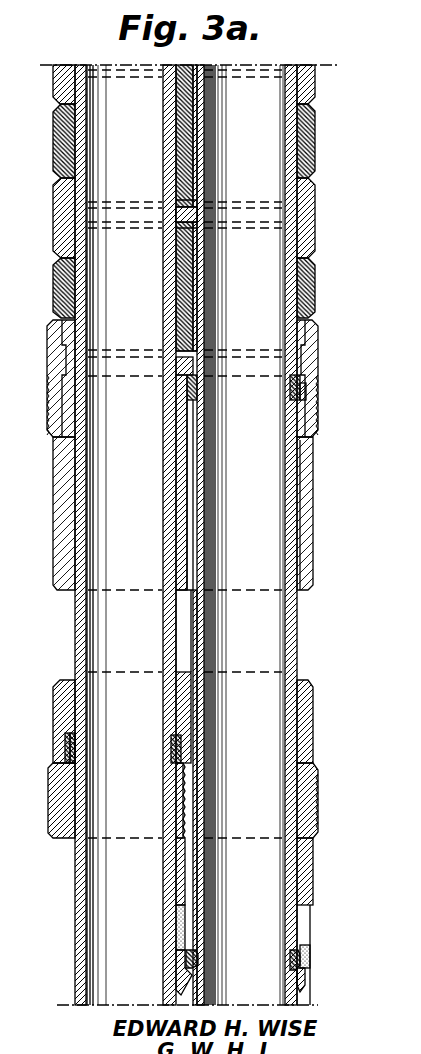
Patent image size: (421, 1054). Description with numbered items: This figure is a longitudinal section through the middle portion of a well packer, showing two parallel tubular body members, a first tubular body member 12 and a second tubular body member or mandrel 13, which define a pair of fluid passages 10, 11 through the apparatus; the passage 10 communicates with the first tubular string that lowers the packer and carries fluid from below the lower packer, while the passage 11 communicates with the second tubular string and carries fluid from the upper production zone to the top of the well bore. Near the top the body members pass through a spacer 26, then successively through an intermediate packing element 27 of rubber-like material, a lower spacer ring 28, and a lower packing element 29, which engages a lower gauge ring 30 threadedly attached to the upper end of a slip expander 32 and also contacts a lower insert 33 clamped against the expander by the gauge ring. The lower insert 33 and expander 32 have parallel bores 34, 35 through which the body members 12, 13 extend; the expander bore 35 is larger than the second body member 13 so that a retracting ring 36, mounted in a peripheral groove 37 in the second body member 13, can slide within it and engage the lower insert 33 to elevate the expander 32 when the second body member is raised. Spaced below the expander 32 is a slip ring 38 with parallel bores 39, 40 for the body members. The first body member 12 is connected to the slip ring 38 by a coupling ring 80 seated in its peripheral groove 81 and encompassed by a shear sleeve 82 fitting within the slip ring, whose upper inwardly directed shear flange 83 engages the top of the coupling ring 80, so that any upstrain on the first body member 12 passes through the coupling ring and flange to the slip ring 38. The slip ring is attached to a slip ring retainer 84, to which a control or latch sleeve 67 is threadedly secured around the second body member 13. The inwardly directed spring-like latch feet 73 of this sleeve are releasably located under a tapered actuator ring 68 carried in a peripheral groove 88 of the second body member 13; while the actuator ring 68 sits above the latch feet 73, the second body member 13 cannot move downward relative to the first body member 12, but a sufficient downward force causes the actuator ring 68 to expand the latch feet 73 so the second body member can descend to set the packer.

The fluid passage 10 is at (185, 454).
The fluid passage 11 is at (217, 535).
The first tubular body member 12 is at (76, 633).
The second tubular body member 13 is at (293, 641).
The spacer 26 is at (60, 81).
The intermediate packing element 27 is at (316, 141).
The lower spacer ring 28 is at (62, 216).
The lower packing element 29 is at (313, 293).
The lower gauge ring 30 is at (58, 345).
The slip expander 32 is at (313, 463).
The lower insert 33 is at (307, 357).
The bore 34 is at (75, 468).
The expander bore 35 is at (298, 559).
The retracting ring 36 is at (302, 396).
The peripheral groove 37 is at (290, 384).
The slip ring 38 is at (313, 726).
The bore 39 is at (75, 697).
The bore 40 is at (298, 698).
The control or latch sleeve 67 is at (313, 869).
The tapered actuator ring 68 is at (305, 950).
The latch feet 73 is at (305, 981).
The coupling ring 80 is at (76, 750).
The peripheral groove 81 is at (172, 758).
The shear sleeve 82 is at (66, 750).
The shear flange 83 is at (72, 735).
The slip ring retainer 84 is at (53, 811).
The peripheral groove 88 is at (198, 959).